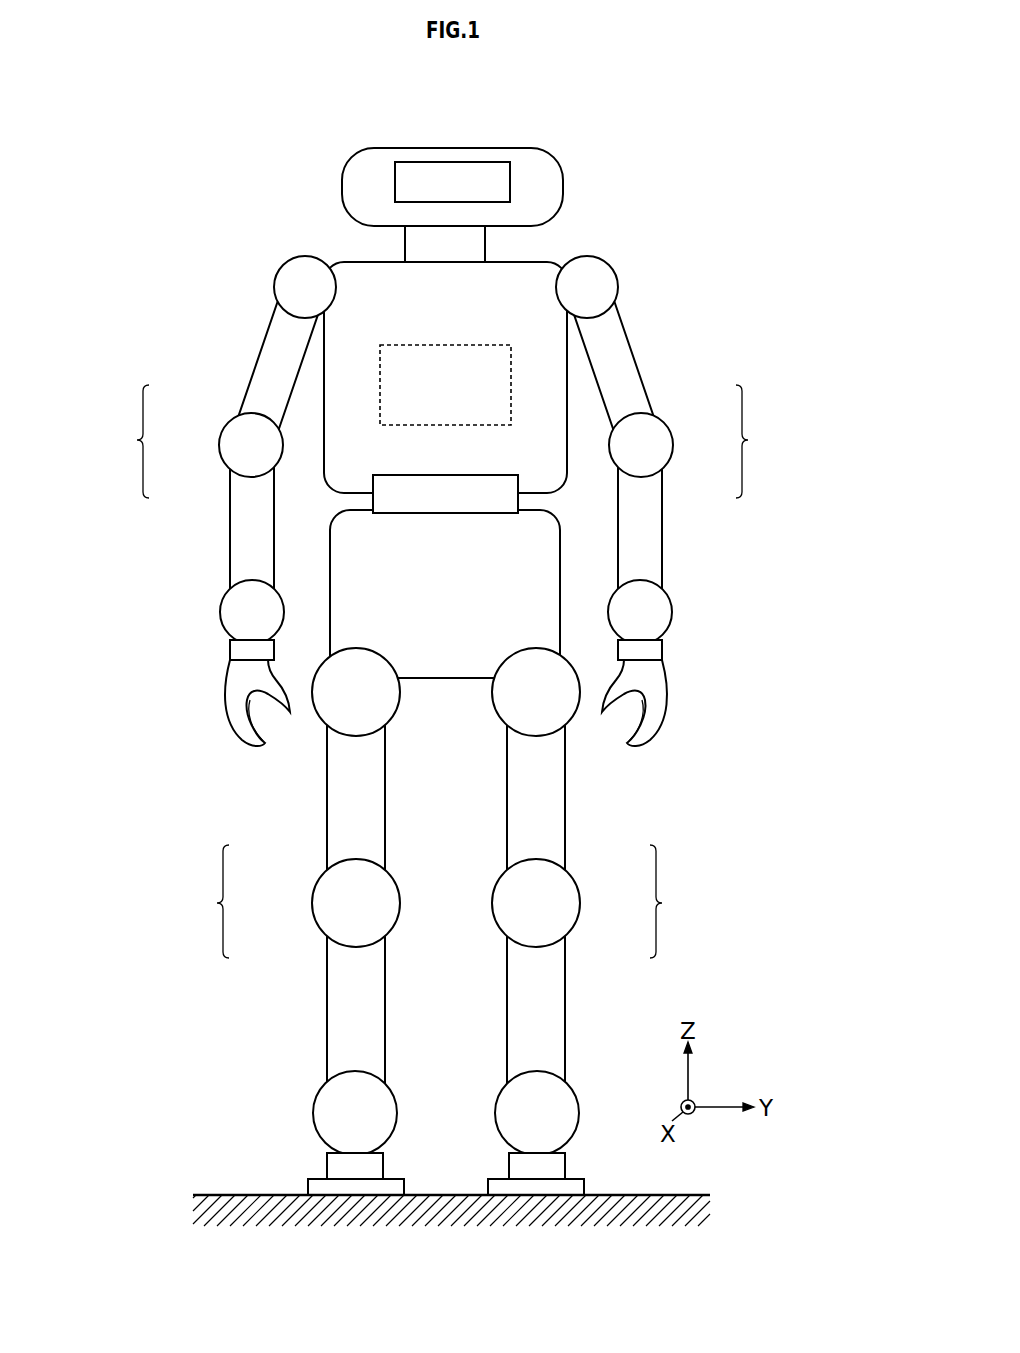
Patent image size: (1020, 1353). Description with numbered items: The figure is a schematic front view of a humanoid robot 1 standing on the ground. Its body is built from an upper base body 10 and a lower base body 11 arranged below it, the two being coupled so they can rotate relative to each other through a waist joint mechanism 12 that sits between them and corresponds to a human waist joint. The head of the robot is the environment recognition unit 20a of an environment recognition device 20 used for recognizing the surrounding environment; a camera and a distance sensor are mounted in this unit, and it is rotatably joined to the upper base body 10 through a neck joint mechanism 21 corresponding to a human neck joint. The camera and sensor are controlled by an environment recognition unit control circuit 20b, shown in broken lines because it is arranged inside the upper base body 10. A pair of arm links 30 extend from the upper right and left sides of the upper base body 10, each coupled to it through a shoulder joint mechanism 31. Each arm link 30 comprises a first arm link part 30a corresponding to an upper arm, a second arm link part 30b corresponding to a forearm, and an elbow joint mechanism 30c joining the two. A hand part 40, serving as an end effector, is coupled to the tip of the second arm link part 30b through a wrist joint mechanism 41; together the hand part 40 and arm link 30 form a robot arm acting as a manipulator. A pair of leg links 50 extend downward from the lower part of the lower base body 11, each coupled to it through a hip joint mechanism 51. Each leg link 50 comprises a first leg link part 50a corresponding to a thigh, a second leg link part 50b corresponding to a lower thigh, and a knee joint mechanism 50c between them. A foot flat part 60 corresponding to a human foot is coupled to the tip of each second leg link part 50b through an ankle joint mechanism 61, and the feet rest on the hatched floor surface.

The robot 1 is at (645, 68).
The upper base body 10 is at (550, 440).
The lower base body 11 is at (535, 572).
The waist joint mechanism 12 is at (503, 502).
The environment recognition device 20 is at (548, 125).
The environment recognition unit 20a is at (547, 175).
The environment recognition unit control circuit 20b is at (457, 343).
The neck joint mechanism 21 is at (475, 245).
The arm link 30 is at (443, 441).
The first arm link part 30a is at (263, 365).
The second arm link part 30b is at (237, 505).
The elbow joint mechanism 30c is at (243, 443).
The shoulder joint mechanism 31 is at (290, 280).
The hand part 40 is at (225, 688).
The wrist joint mechanism 41 is at (237, 618).
The leg link 50 is at (441, 901).
The first leg link part 50a is at (335, 832).
The second leg link part 50b is at (330, 960).
The knee joint mechanism 50c is at (327, 910).
The hip joint mechanism 51 is at (332, 713).
The foot flat part 60 is at (313, 1178).
The ankle joint mechanism 61 is at (330, 1105).